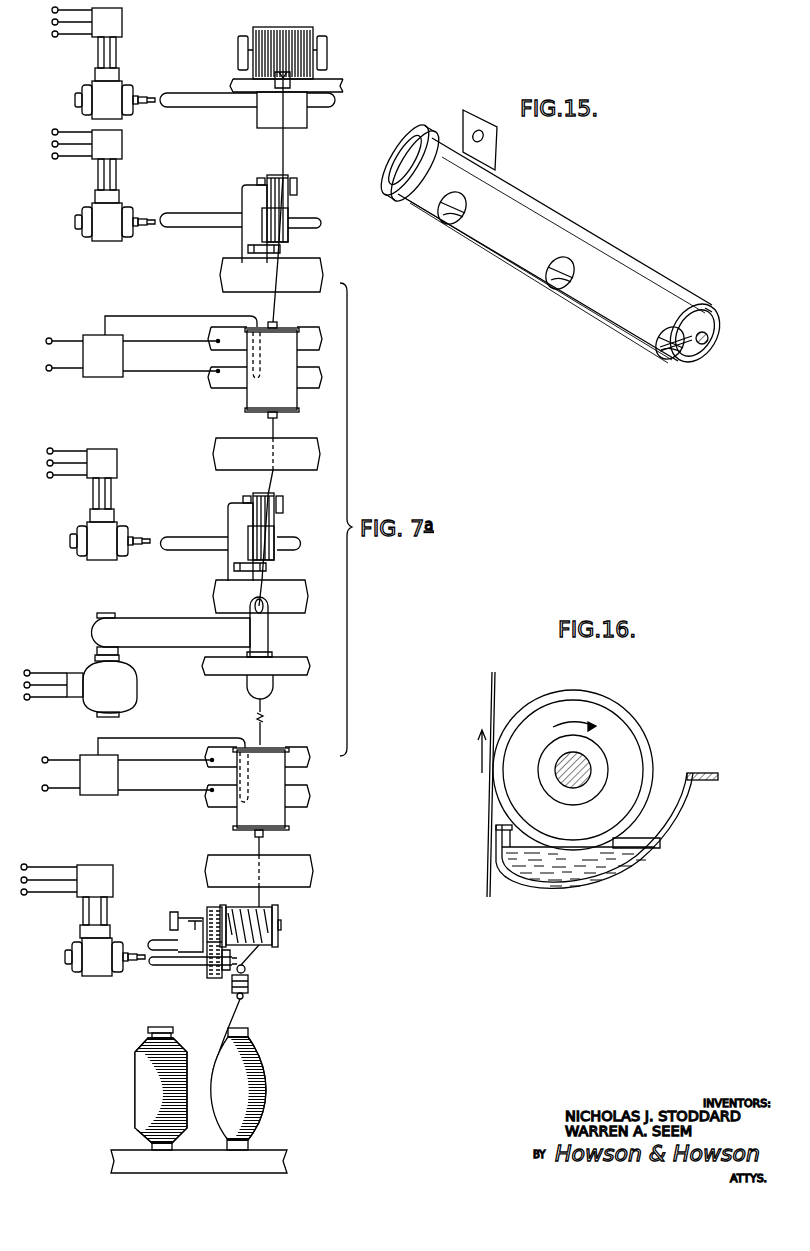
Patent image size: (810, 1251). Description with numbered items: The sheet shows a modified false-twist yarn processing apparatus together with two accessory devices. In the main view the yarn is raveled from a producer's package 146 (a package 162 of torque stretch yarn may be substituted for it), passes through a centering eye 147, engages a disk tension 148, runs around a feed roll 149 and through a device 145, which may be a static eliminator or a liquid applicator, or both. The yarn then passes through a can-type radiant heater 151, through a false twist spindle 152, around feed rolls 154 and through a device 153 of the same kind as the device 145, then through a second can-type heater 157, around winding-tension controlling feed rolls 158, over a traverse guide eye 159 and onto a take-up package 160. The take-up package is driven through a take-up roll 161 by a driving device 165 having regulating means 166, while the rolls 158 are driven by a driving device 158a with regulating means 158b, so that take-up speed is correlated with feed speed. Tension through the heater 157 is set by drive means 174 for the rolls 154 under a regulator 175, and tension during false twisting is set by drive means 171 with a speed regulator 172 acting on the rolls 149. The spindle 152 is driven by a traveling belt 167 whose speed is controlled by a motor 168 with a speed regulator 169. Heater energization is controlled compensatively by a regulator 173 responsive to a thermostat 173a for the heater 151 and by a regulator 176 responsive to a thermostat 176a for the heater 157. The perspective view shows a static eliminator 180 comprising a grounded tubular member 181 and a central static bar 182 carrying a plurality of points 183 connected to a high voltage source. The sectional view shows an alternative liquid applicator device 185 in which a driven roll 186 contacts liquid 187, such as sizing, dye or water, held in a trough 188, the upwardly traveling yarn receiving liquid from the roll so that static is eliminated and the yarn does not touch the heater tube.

In FIG. 7A, the device 145 is at (313, 879).
In FIG. 7A, the producer's package 146 is at (263, 1068).
In FIG. 7A, the centering eye 147 is at (250, 989).
In FIG. 7A, the disk tension 148 is at (246, 972).
In FIG. 7A, the feed roll 149 is at (278, 934).
In FIG. 7A, the can-type heater 151 is at (286, 823).
In FIG. 7A, the false twist spindle 152 is at (273, 688).
In FIG. 7A, the device 153 is at (285, 446).
In FIG. 7A, the feed rolls 154 is at (280, 531).
In FIG. 7A, the can-type heater 157 is at (299, 358).
In FIG. 7A, the winding-tension controlling feed rolls 158 is at (292, 208).
In FIG. 7A, the driving device 158a is at (128, 205).
In FIG. 7A, the regulating means 158b is at (122, 158).
In FIG. 7A, the traverse guide eye 159 is at (286, 83).
In FIG. 7A, the take-up package 160 is at (315, 28).
In FIG. 7A, the take-up roll 161 is at (260, 122).
In FIG. 7A, the package of torque stretch yarn 162 is at (137, 1062).
In FIG. 7A, the driving device 165 is at (115, 88).
In FIG. 7A, the regulating means 166 is at (122, 32).
In FIG. 7A, the traveling belt 167 is at (143, 627).
In FIG. 7A, the motor 168 is at (133, 694).
In FIG. 7A, the speed regulator 169 is at (77, 700).
In FIG. 7A, the drive means 171 is at (78, 974).
In FIG. 7A, the speed regulator 172 is at (107, 856).
In FIG. 7A, the regulator 173 is at (92, 790).
In FIG. 7A, the thermostat 173a is at (250, 745).
In FIG. 7A, the drive means 174 is at (118, 530).
In FIG. 7A, the regulator 175 is at (118, 477).
In FIG. 7A, the regulator 176 is at (97, 340).
In FIG. 7A, the thermostat 176a is at (254, 324).
In FIG. 15, the static eliminator 180 is at (618, 248).
In FIG. 15, the tubular member 181 is at (719, 308).
In FIG. 15, the central static bar 182 is at (699, 346).
In FIG. 15, the points 183 is at (452, 222).
In FIG. 16, the liquid applicator device 185 is at (638, 720).
In FIG. 16, the driven roll 186 is at (579, 692).
In FIG. 16, the liquid 187 is at (634, 845).
In FIG. 16, the trough 188 is at (636, 880).